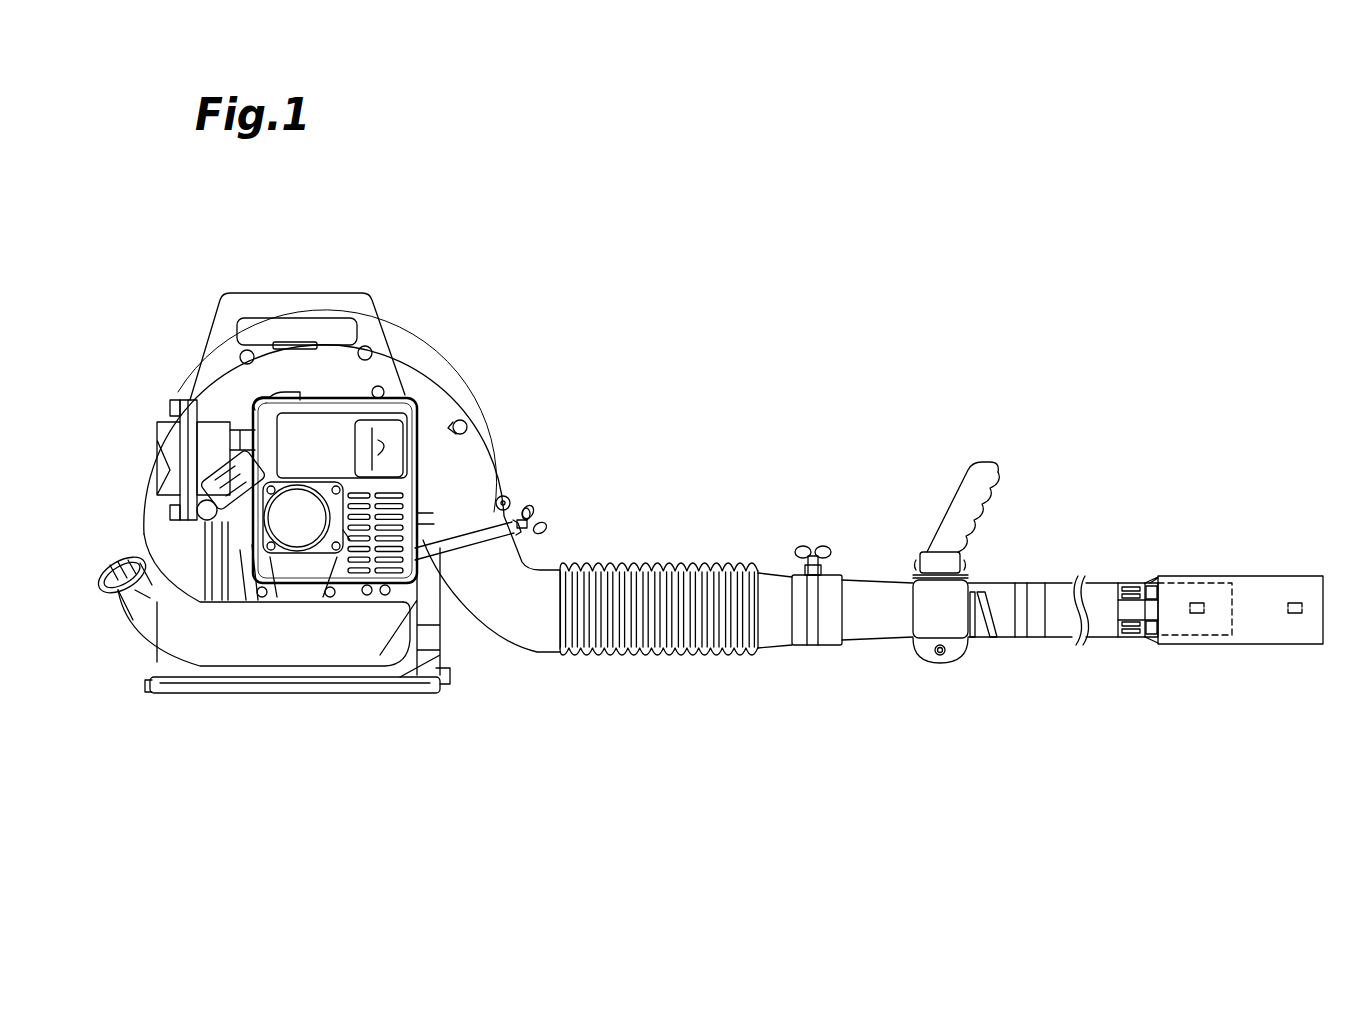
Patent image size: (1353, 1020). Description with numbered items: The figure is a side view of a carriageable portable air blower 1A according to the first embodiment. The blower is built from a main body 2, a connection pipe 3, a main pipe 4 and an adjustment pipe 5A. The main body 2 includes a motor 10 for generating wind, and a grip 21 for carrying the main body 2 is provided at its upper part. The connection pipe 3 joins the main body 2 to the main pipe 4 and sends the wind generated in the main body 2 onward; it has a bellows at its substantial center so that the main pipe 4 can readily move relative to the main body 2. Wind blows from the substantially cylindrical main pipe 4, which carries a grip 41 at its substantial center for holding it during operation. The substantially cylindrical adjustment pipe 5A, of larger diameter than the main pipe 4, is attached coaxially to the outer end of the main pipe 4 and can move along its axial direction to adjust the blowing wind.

The portable air blower 1A is at (592, 234).
The main body 2 is at (446, 390).
The grip 21 is at (306, 303).
The motor 10 is at (338, 398).
The connection pipe 3 is at (540, 583).
The main pipe 4 is at (1008, 628).
The grip 41 is at (977, 472).
The adjustment pipe 5A is at (1250, 592).